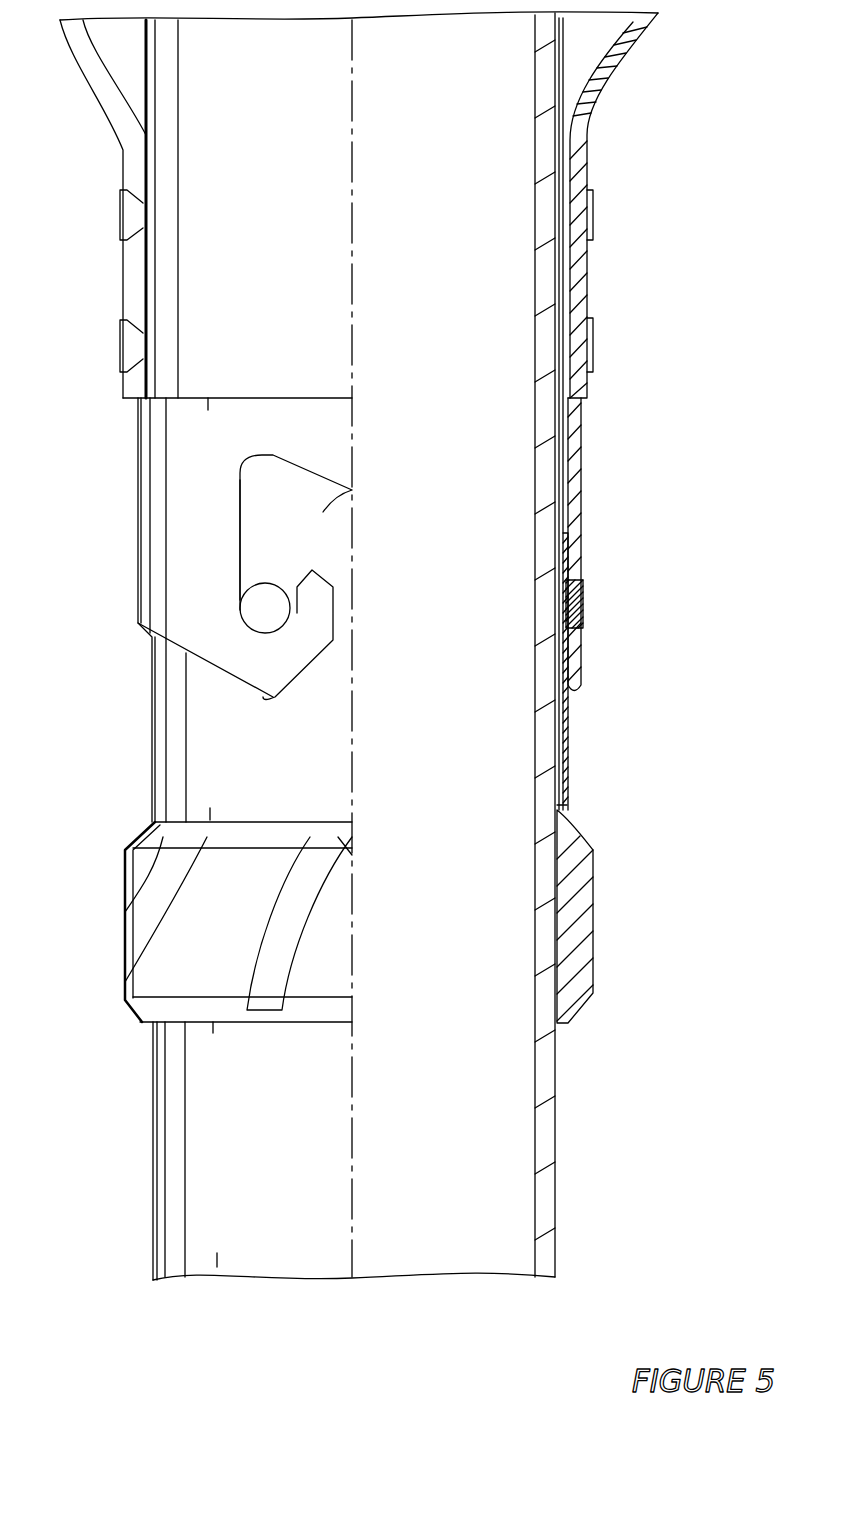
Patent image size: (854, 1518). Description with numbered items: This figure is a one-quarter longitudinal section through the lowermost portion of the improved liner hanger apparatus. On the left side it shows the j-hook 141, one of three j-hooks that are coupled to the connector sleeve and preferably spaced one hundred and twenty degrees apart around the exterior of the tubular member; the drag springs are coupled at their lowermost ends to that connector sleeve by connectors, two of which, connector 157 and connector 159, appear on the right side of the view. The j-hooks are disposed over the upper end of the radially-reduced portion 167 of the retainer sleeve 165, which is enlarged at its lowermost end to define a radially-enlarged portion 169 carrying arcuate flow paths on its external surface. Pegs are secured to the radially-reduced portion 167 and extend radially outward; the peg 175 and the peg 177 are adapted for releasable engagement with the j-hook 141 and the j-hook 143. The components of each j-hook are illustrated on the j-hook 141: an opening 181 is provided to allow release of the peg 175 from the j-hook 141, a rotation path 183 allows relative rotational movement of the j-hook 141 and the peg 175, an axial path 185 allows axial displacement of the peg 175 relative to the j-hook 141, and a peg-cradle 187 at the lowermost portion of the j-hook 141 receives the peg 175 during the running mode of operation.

The j-hook 141 is at (175, 590).
The j-hook 143 is at (582, 552).
The connector 157 is at (592, 228).
The connector 159 is at (592, 351).
The retainer sleeve 165 is at (565, 812).
The radially-reduced portion 167 is at (565, 747).
The radially-enlarged portion 169 is at (593, 952).
The peg 175 is at (280, 610).
The peg 177 is at (583, 627).
The opening 181 is at (340, 633).
The rotation path 183 is at (355, 490).
The axial path 185 is at (258, 490).
The peg-cradle 187 is at (250, 628).